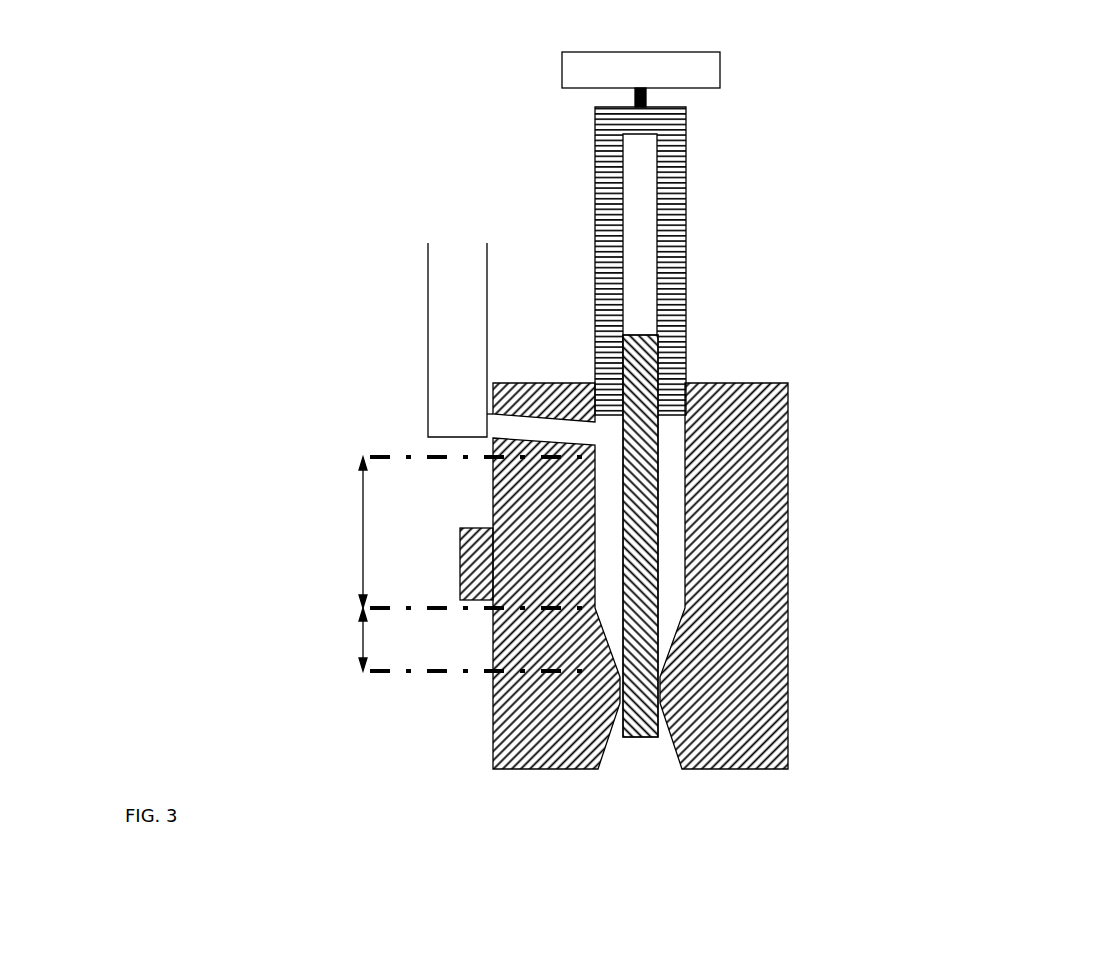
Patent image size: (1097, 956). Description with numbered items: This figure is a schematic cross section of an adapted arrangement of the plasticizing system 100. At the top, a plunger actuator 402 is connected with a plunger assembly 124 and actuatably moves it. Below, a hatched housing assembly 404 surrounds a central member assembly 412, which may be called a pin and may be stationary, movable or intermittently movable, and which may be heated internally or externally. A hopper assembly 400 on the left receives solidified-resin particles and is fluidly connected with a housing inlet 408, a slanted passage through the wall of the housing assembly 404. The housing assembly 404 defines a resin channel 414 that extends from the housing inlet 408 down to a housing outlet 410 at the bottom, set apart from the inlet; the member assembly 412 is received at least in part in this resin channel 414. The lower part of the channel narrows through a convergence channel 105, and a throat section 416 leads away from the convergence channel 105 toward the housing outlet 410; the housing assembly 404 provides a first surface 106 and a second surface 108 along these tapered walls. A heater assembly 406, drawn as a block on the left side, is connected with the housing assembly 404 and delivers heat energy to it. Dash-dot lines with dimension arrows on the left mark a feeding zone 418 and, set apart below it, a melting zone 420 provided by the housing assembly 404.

The plasticizing system 100 is at (342, 280).
The hopper assembly 400 is at (428, 338).
The plunger actuator 402 is at (720, 70).
The plunger assembly 124 is at (686, 265).
The housing assembly 404 is at (788, 577).
The heater assembly 406 is at (458, 563).
The housing inlet 408 is at (541, 414).
The member assembly 412 is at (640, 738).
The resin channel 414 is at (686, 495).
The convergence channel 105 is at (678, 642).
The second surface 108 is at (675, 652).
The throat section 416 is at (665, 688).
The housing outlet 410 is at (643, 770).
The first surface 106 is at (605, 637).
The feeding zone 418 is at (363, 518).
The melting zone 420 is at (363, 638).